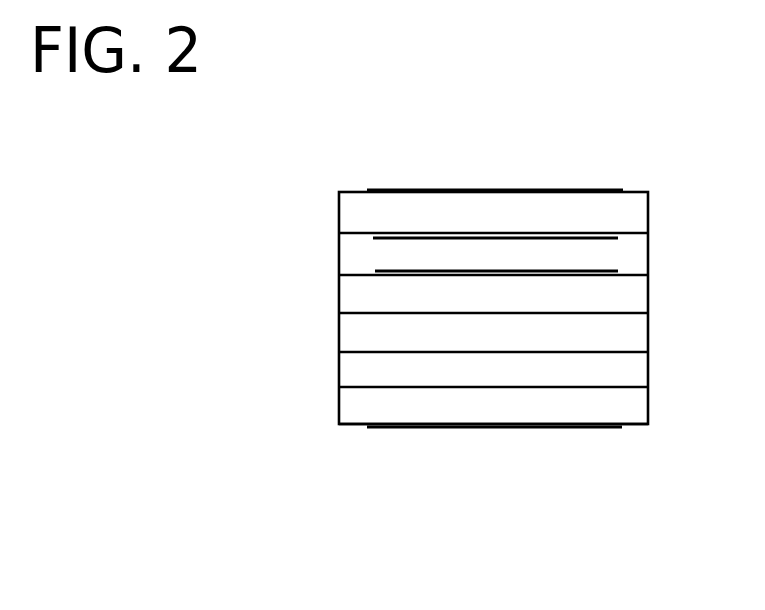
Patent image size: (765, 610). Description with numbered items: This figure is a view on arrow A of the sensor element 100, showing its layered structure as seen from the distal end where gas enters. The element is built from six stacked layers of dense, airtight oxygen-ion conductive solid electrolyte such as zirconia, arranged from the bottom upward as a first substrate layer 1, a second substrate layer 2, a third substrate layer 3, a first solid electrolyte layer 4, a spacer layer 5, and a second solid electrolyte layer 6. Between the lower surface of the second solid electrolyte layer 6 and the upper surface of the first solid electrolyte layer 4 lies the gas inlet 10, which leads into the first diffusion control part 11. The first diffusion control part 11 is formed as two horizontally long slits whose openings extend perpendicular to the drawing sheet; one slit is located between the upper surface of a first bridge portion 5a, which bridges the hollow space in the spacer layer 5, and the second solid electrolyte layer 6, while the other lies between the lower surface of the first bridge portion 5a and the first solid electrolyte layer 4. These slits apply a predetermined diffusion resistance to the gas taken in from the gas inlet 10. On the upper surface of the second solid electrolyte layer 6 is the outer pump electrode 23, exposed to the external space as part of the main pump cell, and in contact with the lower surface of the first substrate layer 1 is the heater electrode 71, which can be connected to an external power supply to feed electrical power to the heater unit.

The solid-state battery 100 is at (620, 165).
The first substrate layer 1 is at (638, 399).
The second substrate layer 2 is at (638, 368).
The third substrate layer 3 is at (638, 331).
The first solid electrolyte layer 4 is at (638, 294).
The spacer layer 5 is at (638, 249).
The first bridge portion 5a is at (410, 253).
The second solid electrolyte layer 6 is at (638, 224).
The gas inlet 10 is at (474, 272).
The first diffusion control part 11 is at (567, 272).
The outer pump electrode 23 is at (494, 190).
The heater electrode 71 is at (497, 430).